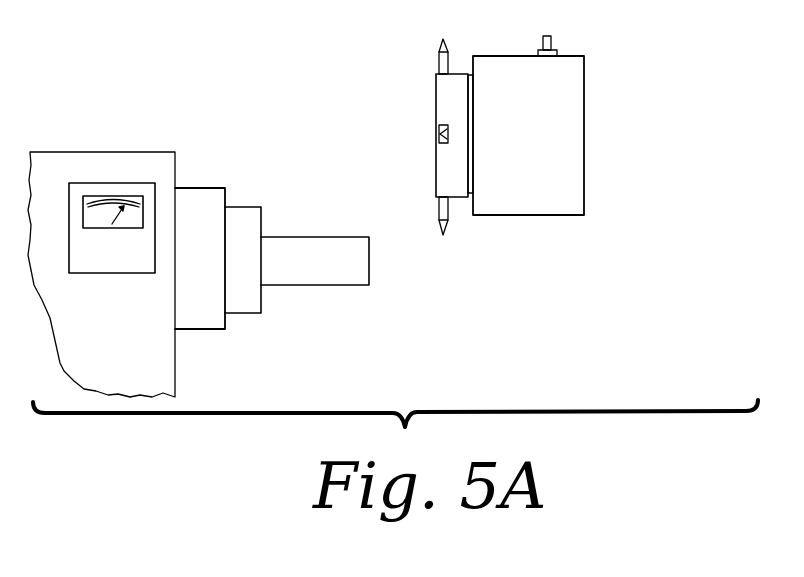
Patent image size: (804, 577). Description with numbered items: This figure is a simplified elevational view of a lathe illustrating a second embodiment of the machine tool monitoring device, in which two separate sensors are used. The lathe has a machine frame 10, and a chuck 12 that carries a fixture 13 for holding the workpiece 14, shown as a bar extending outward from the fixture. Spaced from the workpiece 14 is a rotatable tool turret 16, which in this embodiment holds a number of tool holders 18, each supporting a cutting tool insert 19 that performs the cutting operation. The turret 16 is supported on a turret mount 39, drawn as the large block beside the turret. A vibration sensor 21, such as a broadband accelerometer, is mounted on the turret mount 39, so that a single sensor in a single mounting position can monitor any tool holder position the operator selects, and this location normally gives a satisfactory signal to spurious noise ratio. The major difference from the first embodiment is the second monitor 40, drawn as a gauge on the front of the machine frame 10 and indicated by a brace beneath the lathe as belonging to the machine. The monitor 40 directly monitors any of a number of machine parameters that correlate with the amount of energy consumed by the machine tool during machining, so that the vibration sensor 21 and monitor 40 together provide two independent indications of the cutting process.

The machine frame 10 is at (117, 152).
The chuck 12 is at (212, 190).
The fixture 13 is at (242, 313).
The workpiece 14 is at (325, 285).
The tool turret 16 is at (457, 82).
The tool holder 18 is at (437, 64).
The cutting tool insert 19 is at (441, 45).
The vibration sensor 21 is at (557, 45).
The turret mount 39 is at (573, 183).
The second monitor 40 is at (111, 268).